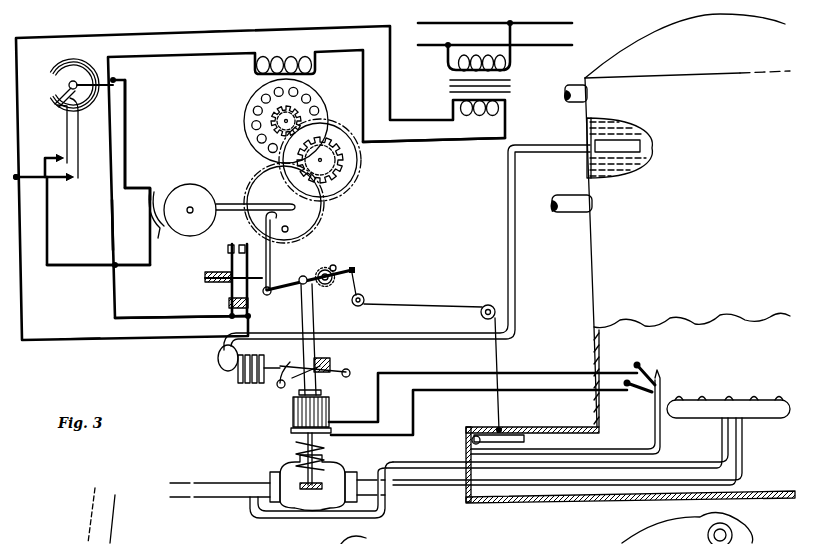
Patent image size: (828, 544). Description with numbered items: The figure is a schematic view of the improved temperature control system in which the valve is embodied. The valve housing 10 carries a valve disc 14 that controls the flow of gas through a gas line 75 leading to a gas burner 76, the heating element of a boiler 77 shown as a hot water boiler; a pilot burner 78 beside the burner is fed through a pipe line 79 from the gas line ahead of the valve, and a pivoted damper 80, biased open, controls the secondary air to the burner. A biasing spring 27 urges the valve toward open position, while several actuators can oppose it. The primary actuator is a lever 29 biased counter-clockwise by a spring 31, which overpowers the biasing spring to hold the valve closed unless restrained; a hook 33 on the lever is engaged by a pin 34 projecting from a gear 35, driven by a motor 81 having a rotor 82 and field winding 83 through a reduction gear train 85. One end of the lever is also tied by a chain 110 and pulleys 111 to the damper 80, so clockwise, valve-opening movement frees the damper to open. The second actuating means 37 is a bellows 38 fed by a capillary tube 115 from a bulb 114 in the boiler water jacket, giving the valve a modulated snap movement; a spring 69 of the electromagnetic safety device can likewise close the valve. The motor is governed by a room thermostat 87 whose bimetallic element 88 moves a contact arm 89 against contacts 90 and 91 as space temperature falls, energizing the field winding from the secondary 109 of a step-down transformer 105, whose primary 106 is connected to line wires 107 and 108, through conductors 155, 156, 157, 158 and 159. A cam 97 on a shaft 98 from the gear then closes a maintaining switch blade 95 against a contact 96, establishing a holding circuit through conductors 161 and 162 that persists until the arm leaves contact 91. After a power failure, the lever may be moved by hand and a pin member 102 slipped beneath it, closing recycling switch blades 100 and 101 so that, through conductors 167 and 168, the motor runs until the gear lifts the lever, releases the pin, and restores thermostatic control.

The valve housing 10 is at (287, 470).
The valve disc 14 is at (330, 476).
The biasing spring 27 is at (326, 447).
The lever 29 is at (288, 285).
The spring 31 is at (323, 272).
The hook 33 is at (276, 254).
The pin 34 is at (292, 224).
The gear 35 is at (320, 212).
The second actuating means 37 is at (348, 360).
The bellows 38 is at (243, 384).
The spring 69 is at (324, 396).
The gas line 75 is at (424, 484).
The gas burner 76 is at (754, 418).
The boiler 77 is at (590, 266).
The pilot burner 78 is at (652, 417).
The damper 80 is at (512, 428).
The pipe line 79 is at (312, 512).
The motor 81 is at (234, 99).
The rotor 82 is at (248, 131).
The field winding 83 is at (284, 55).
The reduction gear train 85 is at (355, 170).
The room thermostat 87 is at (50, 106).
The bimetallic element 88 is at (58, 70).
The contact arm 89 is at (84, 153).
The contact 90 is at (56, 182).
The contact 91 is at (71, 178).
The switch blade 95 is at (160, 233).
The contact 96 is at (147, 188).
The cam 97 is at (180, 190).
The shaft 98 is at (232, 203).
The switch blade 100 is at (220, 272).
The switch blade 101 is at (247, 245).
The pin member 102 is at (228, 300).
The step-down transformer 105 is at (515, 92).
The primary 106 is at (512, 60).
The line wire 107 is at (572, 23).
The line wire 108 is at (572, 45).
The secondary 109 is at (480, 113).
The chain 110 is at (404, 306).
The pulleys 111 is at (360, 296).
The bulb 114 is at (636, 150).
The capillary tube 115 is at (516, 241).
The conductor 155 is at (203, 32).
The conductor 156 is at (22, 178).
The conductor 157 is at (66, 266).
The conductor 158 is at (114, 228).
The conductor 159 is at (415, 143).
The conductor 161 is at (126, 106).
The conductor 162 is at (131, 266).
The conductor 167 is at (74, 342).
The conductor 168 is at (160, 318).